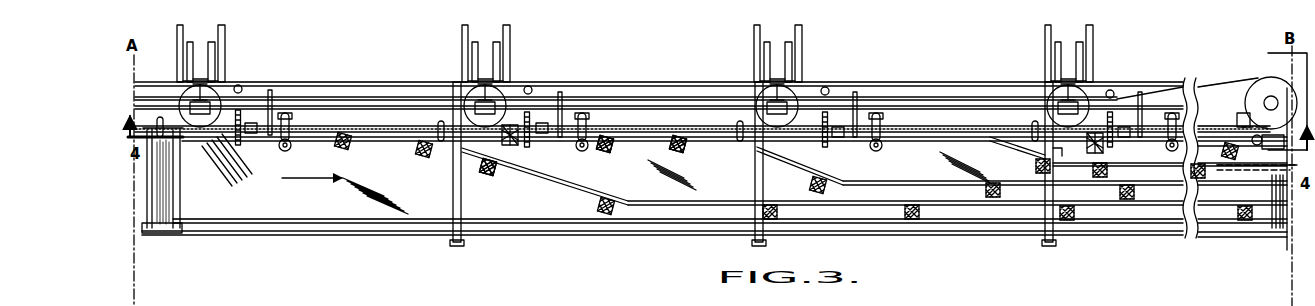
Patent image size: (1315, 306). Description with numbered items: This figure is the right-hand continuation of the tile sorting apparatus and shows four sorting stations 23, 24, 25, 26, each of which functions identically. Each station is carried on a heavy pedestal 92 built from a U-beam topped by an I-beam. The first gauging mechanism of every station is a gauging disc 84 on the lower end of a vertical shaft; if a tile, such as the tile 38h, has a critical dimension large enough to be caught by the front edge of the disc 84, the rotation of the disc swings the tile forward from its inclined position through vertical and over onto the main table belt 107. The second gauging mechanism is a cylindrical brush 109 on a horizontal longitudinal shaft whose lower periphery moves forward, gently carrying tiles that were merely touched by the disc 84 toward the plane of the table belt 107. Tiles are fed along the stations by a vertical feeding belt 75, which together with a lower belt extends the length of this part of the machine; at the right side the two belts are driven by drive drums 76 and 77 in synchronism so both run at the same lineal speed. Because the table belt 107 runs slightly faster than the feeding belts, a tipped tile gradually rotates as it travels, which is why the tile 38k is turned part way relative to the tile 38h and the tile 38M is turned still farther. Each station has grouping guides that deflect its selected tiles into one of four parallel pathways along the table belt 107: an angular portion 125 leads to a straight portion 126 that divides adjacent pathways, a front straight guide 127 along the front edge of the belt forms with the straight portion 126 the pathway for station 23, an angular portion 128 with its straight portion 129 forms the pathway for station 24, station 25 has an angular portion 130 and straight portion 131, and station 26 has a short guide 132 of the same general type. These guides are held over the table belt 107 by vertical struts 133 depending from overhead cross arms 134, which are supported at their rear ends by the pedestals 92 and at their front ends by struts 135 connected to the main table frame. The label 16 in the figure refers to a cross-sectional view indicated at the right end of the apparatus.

The pedestal 92 is at (226, 59).
The sorting station 23 is at (285, 69).
The sorting station 24 is at (536, 72).
The sorting station 25 is at (824, 70).
The sorting station 26 is at (1109, 75).
The gauging disc 84 is at (235, 142).
The cylindrical brush 109 is at (243, 143).
The main table belt 107 is at (409, 184).
The vertical strut 133 is at (463, 163).
The cross arm 134 is at (462, 205).
The strut 135 is at (448, 241).
The tile 38h is at (503, 178).
The tile 38k is at (605, 152).
The tile 38M is at (686, 151).
The angular portion 125 is at (575, 187).
The straight portion 126 is at (670, 201).
The front straight guide 127 is at (677, 220).
The angular portion 128 is at (820, 170).
The straight portion 129 is at (889, 180).
The angular portion 130 is at (1040, 155).
The straight portion 131 is at (1062, 152).
The short guide 132 is at (1247, 154).
The vertical feeding belt 75 is at (1283, 76).
The drive drum 76 is at (1245, 115).
The drive drum 77 is at (1262, 82).
The section indicator 16 is at (1272, 56).